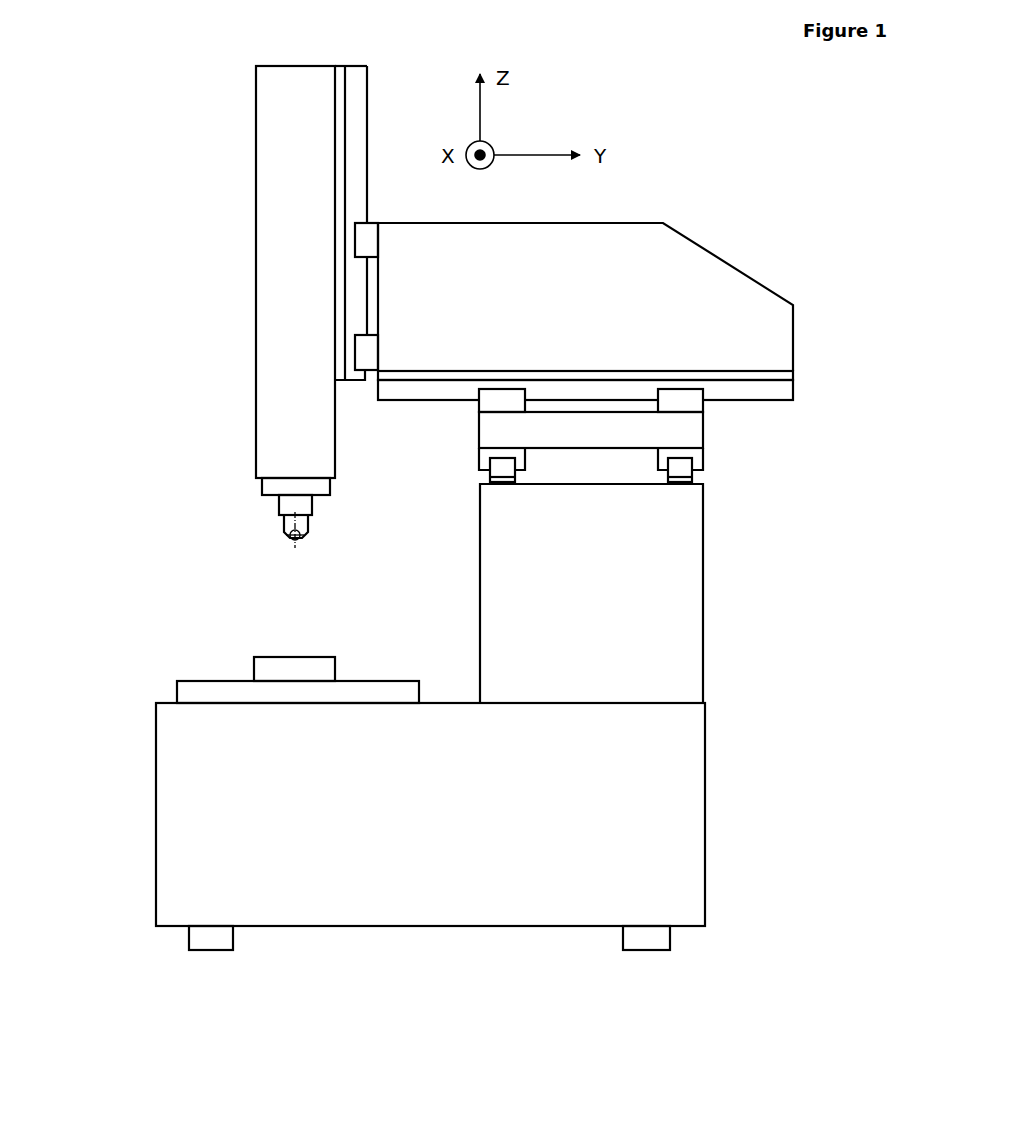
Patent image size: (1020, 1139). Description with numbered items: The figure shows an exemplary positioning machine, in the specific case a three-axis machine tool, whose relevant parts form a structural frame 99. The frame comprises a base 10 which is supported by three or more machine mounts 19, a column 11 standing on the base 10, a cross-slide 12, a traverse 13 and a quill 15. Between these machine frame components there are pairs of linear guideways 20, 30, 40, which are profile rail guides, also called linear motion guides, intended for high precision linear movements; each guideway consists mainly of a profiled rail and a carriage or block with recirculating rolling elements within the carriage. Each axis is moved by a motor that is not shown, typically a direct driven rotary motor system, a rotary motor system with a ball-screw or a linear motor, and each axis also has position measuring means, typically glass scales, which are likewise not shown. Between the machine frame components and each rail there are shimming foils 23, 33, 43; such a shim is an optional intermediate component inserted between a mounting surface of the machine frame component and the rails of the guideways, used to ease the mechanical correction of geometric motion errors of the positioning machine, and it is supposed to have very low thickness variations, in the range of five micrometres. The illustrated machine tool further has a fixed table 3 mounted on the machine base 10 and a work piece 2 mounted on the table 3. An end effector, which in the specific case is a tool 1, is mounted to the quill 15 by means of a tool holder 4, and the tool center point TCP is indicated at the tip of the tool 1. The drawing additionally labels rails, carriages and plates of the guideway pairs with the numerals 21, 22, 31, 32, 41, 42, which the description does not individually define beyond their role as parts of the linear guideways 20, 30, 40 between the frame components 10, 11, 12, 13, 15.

The structural frame 99 is at (647, 185).
The quill 15 is at (266, 97).
The linear guide rail 41 is at (340, 107).
The guide carriage 42 is at (347, 238).
The shimming foil 43 is at (337, 278).
The traverse 13 is at (697, 278).
The carrier plate 31 is at (670, 397).
The guide rail 32 is at (775, 389).
The shimming foil 33 is at (793, 376).
The cross-slide 12 is at (697, 427).
The cross slide 21 is at (700, 460).
The guide block 22 is at (687, 473).
The shimming foil 23 is at (680, 482).
The column 11 is at (638, 665).
The base 10 is at (620, 777).
The machine mounts 19 is at (652, 937).
The fixed table 3 is at (223, 693).
The work piece 2 is at (265, 666).
The tool holder 4 is at (290, 500).
The tool 1 is at (283, 530).
The tool center point TCP is at (290, 540).
The linear guideway 40 is at (357, 404).
The linear guideway 30 is at (452, 412).
The linear guideway 20 is at (460, 470).